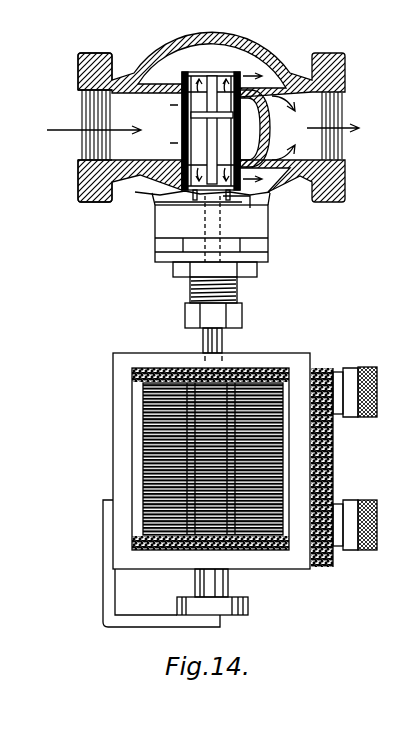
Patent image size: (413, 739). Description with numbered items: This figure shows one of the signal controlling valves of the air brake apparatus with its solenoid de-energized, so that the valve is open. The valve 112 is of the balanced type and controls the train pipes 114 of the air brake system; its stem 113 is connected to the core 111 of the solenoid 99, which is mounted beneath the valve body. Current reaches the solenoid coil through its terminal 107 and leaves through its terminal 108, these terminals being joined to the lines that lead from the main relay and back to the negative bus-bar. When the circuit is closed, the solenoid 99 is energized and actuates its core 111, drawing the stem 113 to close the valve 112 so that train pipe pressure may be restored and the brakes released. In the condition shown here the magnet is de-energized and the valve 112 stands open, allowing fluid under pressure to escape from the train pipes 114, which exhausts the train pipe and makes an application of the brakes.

The train pipes 114 is at (88, 108).
The valve 112 is at (203, 122).
The stem 113 is at (223, 341).
The solenoid 99 is at (140, 421).
The terminal 107 is at (349, 375).
The terminal 108 is at (341, 508).
The core 111 is at (232, 587).